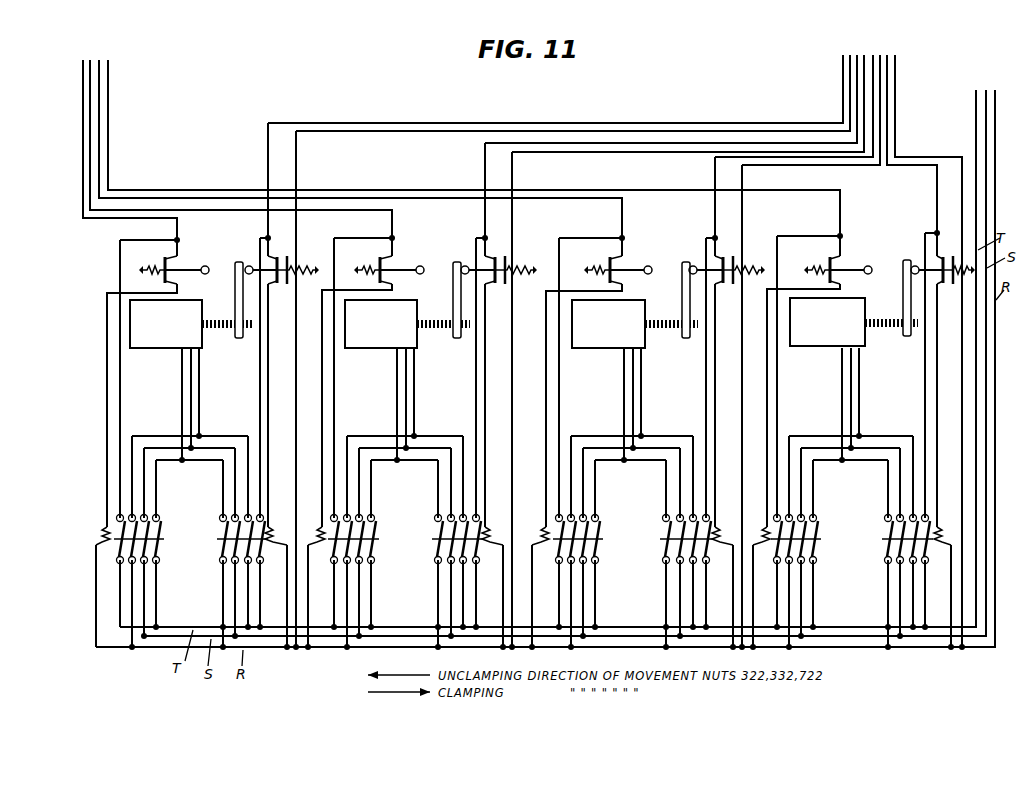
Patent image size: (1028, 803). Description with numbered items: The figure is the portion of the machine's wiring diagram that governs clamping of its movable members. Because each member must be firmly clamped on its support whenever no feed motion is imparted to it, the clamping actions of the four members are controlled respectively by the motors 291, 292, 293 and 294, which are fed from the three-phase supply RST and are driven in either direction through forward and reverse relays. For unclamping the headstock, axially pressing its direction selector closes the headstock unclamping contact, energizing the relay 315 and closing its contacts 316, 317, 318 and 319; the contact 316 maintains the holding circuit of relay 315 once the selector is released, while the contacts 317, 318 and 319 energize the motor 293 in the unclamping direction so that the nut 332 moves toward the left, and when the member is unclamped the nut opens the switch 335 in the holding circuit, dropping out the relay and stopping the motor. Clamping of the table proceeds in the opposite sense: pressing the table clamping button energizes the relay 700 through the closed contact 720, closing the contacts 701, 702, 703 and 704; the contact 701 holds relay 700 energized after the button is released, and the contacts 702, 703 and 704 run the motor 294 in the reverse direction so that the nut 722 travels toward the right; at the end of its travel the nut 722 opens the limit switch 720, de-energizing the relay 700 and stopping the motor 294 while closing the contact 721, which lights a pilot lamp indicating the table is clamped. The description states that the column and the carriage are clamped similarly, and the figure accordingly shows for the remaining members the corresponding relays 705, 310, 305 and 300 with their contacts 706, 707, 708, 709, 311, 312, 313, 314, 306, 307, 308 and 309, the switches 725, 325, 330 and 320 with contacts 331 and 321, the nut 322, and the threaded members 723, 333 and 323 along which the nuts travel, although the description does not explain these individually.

The motor 291 is at (827, 322).
The motor 292 is at (608, 324).
The motor 293 is at (381, 324).
The motor 294 is at (166, 324).
The transistor 725 is at (160, 266).
The switch 335 is at (375, 266).
The transistor 325 is at (605, 266).
The limit switch 720 is at (279, 257).
The transistor 330 is at (498, 257).
The transistor 320 is at (726, 257).
The contact 721 is at (295, 262).
The resistor 331 is at (512, 262).
The resistor 321 is at (742, 260).
The nut 722 is at (239, 262).
The nut 332 is at (452, 285).
The movement nut 322 is at (681, 282).
The lead screw 723 is at (213, 318).
The lead screw 333 is at (433, 330).
The lead screw 323 is at (666, 330).
The relay coil 705 is at (95, 524).
The relay 700 is at (280, 524).
The relay 315 is at (318, 524).
The relay coil 310 is at (494, 526).
The relay coil 305 is at (542, 524).
The relay coil 300 is at (722, 526).
The relay contact 706 is at (118, 548).
The relay contact 707 is at (130, 556).
The relay contact 708 is at (160, 522).
The relay contact 709 is at (150, 540).
The contact 701 is at (256, 552).
The contact 702 is at (245, 555).
The contact 703 is at (231, 552).
The contact 704 is at (218, 548).
The contact 316 is at (340, 550).
The contact 317 is at (376, 523).
The contact 318 is at (366, 536).
The contact 319 is at (355, 546).
The relay contact 311 is at (474, 548).
The relay contact 312 is at (460, 556).
The relay contact 313 is at (449, 552).
The relay contact 314 is at (437, 548).
The relay contact 306 is at (560, 550).
The relay contact 307 is at (580, 552).
The relay contact 308 is at (590, 538).
The relay contact 309 is at (600, 524).